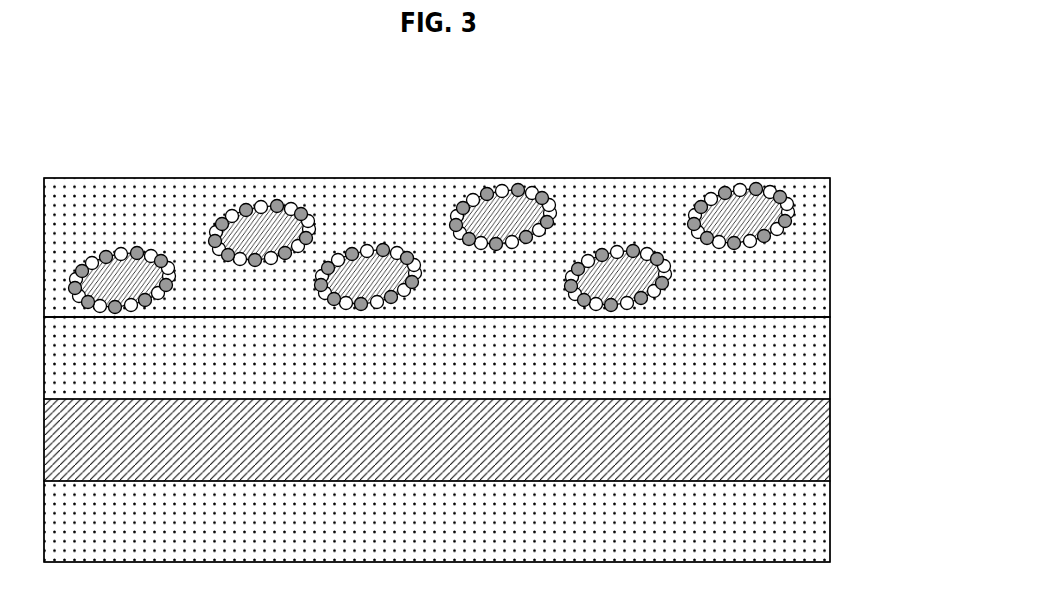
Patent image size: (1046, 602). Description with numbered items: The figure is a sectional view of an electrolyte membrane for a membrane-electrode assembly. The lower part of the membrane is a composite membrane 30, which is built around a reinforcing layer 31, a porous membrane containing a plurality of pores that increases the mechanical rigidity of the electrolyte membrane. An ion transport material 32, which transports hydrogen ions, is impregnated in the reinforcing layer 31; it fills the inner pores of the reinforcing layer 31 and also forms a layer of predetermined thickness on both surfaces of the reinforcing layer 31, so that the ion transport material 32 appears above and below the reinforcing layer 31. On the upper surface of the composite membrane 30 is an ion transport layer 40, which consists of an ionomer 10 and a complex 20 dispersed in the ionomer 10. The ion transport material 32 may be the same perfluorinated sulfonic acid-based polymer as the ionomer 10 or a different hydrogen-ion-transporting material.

The ionomer 10 is at (617, 202).
The complex 20 is at (372, 218).
The composite membrane 30 is at (903, 363).
The reinforcing layer 31 is at (830, 429).
The ion transport material 32 is at (830, 362).
The ion transport layer 40 is at (835, 178).